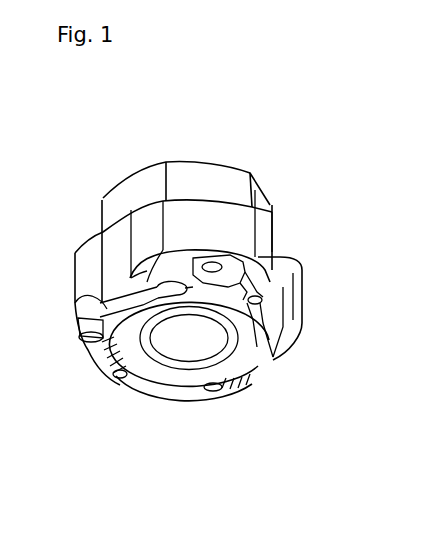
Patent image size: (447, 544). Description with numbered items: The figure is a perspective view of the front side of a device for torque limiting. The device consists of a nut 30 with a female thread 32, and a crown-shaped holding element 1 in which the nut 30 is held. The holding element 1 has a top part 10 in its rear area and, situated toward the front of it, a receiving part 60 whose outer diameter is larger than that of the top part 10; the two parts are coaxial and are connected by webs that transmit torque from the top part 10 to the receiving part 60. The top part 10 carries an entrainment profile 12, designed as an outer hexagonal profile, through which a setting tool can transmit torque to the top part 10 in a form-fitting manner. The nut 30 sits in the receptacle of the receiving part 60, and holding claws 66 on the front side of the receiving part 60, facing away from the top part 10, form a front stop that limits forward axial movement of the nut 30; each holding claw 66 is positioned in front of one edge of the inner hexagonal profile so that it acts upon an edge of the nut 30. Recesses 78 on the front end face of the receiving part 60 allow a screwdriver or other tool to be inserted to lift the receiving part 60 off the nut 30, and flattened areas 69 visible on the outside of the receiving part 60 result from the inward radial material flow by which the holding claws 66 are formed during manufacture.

The holding element 1 is at (277, 253).
The top part 10 is at (225, 265).
The entrainment profile 12 is at (225, 306).
The nut 30 is at (243, 380).
The female thread 32 is at (183, 337).
The receiving part 60 is at (258, 248).
The holding claws 66 is at (257, 302).
The flattened areas 69 is at (162, 265).
The recesses 78 is at (220, 272).